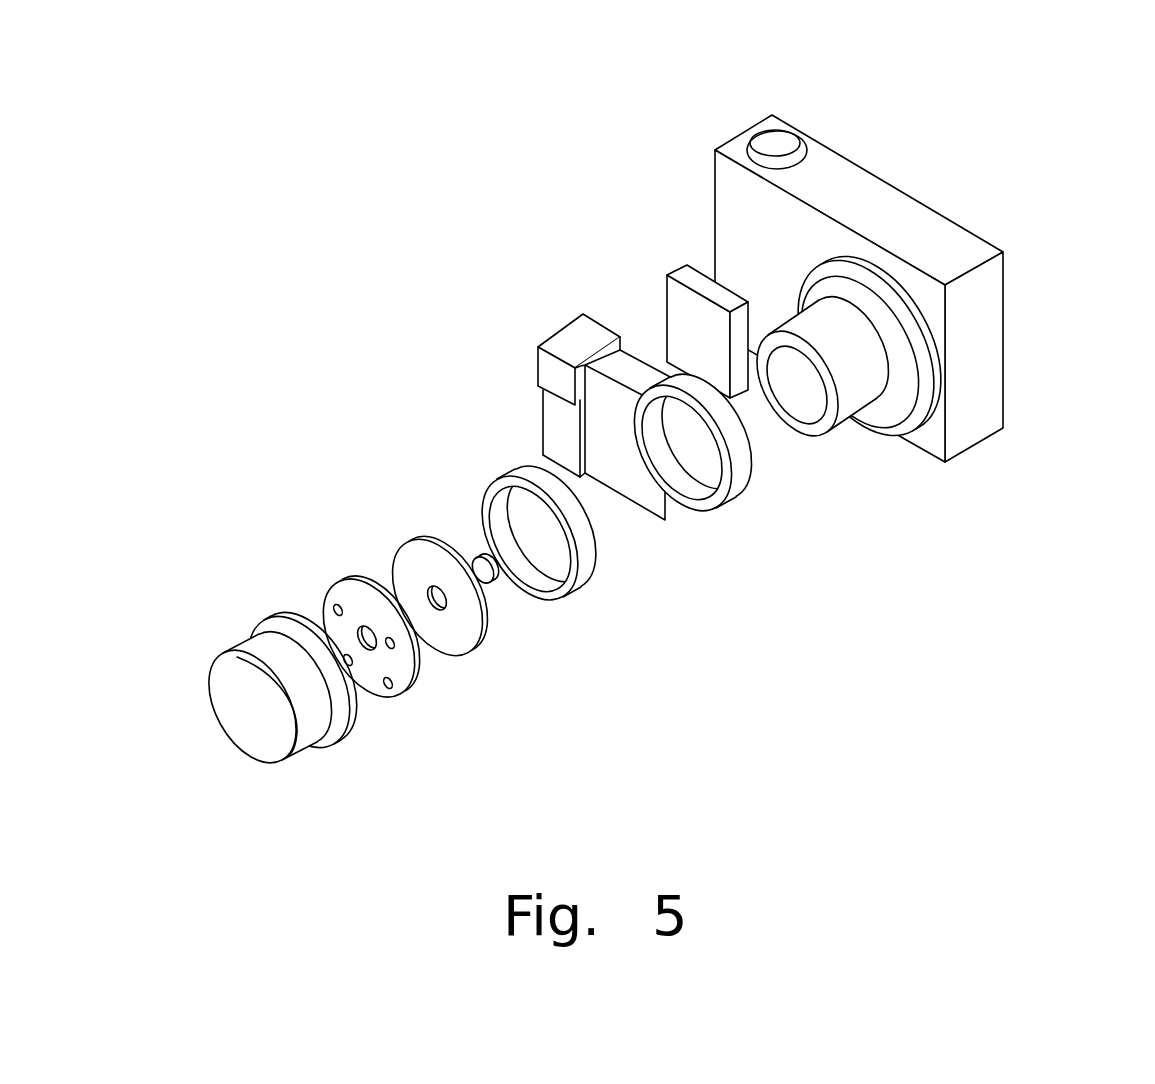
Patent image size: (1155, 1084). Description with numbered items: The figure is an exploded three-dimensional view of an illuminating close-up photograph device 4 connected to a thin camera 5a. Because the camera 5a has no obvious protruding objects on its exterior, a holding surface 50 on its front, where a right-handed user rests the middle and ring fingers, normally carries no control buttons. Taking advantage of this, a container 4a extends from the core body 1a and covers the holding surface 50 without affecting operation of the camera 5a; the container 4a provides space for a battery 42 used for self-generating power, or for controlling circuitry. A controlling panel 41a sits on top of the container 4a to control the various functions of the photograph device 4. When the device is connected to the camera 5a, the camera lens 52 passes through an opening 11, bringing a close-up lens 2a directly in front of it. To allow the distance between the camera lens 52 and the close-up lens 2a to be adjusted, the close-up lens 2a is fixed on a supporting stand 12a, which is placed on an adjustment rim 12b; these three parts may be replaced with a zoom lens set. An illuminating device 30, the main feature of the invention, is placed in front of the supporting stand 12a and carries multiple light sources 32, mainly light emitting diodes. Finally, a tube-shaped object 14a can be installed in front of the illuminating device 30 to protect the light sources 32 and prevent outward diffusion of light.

The photograph device 4 is at (617, 200).
The controlling panel 41a is at (583, 340).
The battery 42 is at (686, 276).
The holding surface 50 is at (745, 220).
The camera lens 52 is at (847, 393).
The camera 5a is at (1030, 310).
The container 4a is at (624, 477).
The opening 11 is at (705, 467).
The core body 1a is at (745, 525).
The adjustment rim 12b is at (503, 488).
The close-up lens 2a is at (475, 565).
The supporting stand 12a is at (415, 570).
The illuminating device 30 is at (343, 646).
The light sources 32 is at (393, 683).
The tube-shaped object 14a is at (317, 769).